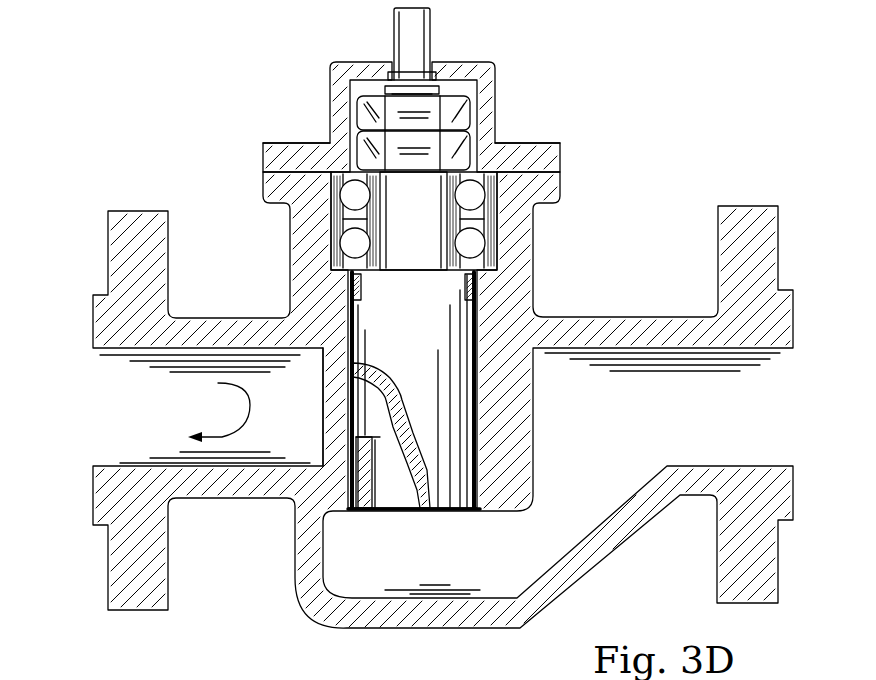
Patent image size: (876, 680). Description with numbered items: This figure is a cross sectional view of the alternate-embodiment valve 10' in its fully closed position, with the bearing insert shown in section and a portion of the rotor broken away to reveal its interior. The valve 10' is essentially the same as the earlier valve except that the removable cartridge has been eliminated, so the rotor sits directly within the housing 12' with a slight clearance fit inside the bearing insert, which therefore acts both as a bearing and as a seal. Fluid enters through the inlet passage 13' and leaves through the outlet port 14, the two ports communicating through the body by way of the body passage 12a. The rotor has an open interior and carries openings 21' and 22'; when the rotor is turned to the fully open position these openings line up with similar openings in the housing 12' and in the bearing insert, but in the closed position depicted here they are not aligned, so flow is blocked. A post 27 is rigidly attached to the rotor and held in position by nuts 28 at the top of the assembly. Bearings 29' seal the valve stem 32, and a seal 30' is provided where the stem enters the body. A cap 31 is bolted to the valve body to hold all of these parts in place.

The valve 10' is at (433, 321).
The housing 12' is at (443, 407).
The body passage opening 12a is at (330, 400).
The inlet/outlet flow passage 13' is at (165, 409).
The outlet port 14 is at (793, 420).
The opening 21' is at (352, 435).
The opening 22' is at (469, 390).
The post 27 is at (432, 26).
The nuts 28 is at (460, 152).
The bearings 29' is at (479, 221).
The seal 30' is at (474, 279).
The cap 31 is at (278, 142).
The valve stem 32 is at (364, 40).